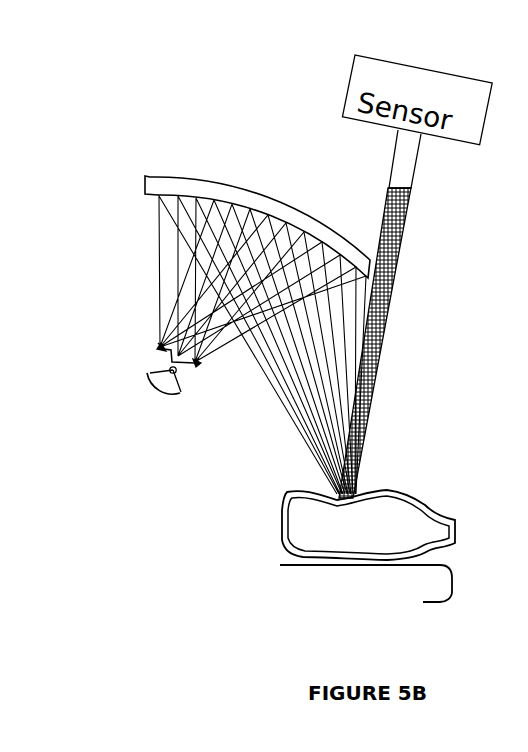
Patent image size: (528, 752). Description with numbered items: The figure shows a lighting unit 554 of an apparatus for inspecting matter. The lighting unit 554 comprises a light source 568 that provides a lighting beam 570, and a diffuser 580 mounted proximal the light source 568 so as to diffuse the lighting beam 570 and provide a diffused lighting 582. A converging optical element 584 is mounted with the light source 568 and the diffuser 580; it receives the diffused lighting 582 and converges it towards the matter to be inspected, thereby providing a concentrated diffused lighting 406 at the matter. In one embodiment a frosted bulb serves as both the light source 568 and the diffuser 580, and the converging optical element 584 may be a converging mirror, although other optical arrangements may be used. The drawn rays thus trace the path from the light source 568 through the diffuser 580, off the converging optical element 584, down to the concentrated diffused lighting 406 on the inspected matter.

The lighting unit 554 is at (200, 125).
The converging optical element 584 is at (230, 183).
The diffused lighting 582 is at (152, 232).
The diffuser 580 is at (150, 345).
The lighting beam 570 is at (161, 363).
The light source 568 is at (176, 394).
The concentrated diffused lighting 406 is at (292, 452).